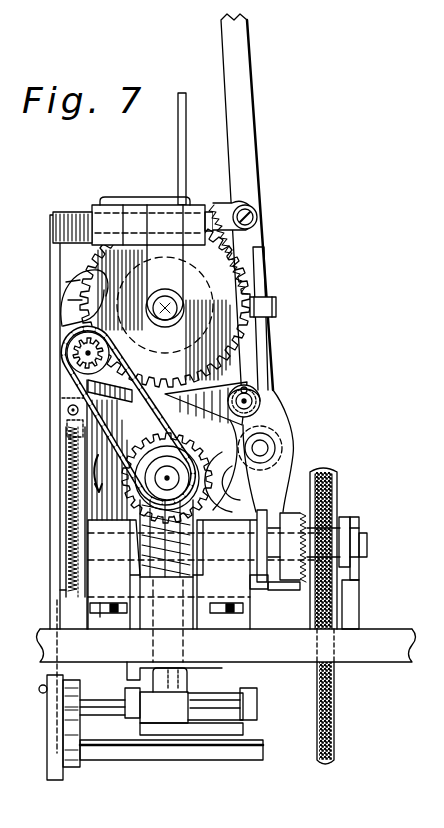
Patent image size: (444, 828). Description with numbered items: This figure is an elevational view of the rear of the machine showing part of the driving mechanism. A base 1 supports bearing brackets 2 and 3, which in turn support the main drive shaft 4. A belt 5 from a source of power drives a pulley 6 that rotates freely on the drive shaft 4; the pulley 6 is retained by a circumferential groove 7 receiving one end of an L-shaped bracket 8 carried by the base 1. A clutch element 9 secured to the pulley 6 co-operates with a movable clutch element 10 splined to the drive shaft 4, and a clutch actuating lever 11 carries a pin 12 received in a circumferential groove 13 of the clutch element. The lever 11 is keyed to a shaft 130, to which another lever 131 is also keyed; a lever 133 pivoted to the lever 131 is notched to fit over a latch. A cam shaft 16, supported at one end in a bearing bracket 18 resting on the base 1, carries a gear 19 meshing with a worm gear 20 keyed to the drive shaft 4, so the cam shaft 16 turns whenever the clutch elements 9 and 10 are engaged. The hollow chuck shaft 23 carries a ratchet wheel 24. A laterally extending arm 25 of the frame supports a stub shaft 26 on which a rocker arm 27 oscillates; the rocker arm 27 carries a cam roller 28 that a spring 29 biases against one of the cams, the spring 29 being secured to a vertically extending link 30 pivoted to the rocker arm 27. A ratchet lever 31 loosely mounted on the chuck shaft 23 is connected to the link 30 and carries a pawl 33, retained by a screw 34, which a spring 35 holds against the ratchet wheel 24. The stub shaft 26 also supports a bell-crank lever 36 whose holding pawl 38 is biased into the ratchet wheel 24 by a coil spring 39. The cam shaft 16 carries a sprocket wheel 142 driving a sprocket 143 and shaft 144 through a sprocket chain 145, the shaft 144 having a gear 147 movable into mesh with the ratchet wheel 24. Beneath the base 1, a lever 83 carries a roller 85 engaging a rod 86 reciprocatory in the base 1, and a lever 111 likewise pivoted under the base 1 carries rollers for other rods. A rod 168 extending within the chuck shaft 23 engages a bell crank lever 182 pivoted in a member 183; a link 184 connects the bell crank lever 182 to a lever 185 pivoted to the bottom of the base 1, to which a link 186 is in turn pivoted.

The base 1 is at (404, 660).
The bearing bracket 2 is at (232, 622).
The bearing bracket 3 is at (100, 618).
The main drive shaft 4 is at (367, 545).
The belt 5 is at (334, 722).
The pulley 6 is at (337, 478).
The circumferential groove 7 is at (354, 518).
The L-shaped bracket 8 is at (359, 592).
The clutch element 9 is at (300, 510).
The movable clutch element 10 is at (284, 590).
The clutch actuating lever 11 is at (229, 482).
The pin 12 is at (260, 500).
The circumferential groove 13 is at (265, 582).
The cam shaft 16 is at (167, 480).
The bearing bracket 18 is at (160, 608).
The gear 19 is at (134, 522).
The worm gear 20 is at (142, 538).
The hollow chuck shaft 23 is at (172, 307).
The ratchet wheel 24 is at (232, 278).
The laterally extending arm 25 is at (292, 436).
The stub shaft 26 is at (250, 402).
The rocker arm 27 is at (130, 445).
The cam roller 28 is at (206, 398).
The spring 29 is at (66, 508).
The vertically extending link 30 is at (62, 438).
The ratchet lever 31 is at (72, 284).
The pawl 33 is at (68, 300).
The screw 34 is at (66, 318).
The spring 35 is at (66, 282).
The bell-crank lever 36 is at (258, 338).
The holding pawl 38 is at (270, 308).
The coil spring 39 is at (255, 210).
The lever 83 is at (125, 700).
The roller 85 is at (190, 705).
The rod 86 is at (187, 676).
The lever 111 is at (257, 705).
The shaft 130 is at (263, 448).
The lever 131 is at (240, 100).
The lever 133 is at (123, 202).
The sprocket wheel 142 is at (219, 465).
The sprocket 143 is at (113, 389).
The shaft 144 is at (66, 348).
The sprocket chain 145 is at (226, 406).
The gear 147 is at (62, 372).
The rod 168 is at (152, 328).
The bell crank lever 182 is at (168, 268).
The member 183 is at (176, 205).
The rod or link 184 is at (56, 460).
The lever 185 is at (80, 733).
The rod or link 186 is at (63, 776).